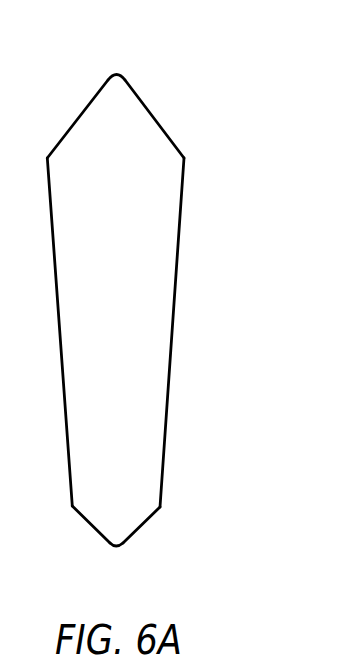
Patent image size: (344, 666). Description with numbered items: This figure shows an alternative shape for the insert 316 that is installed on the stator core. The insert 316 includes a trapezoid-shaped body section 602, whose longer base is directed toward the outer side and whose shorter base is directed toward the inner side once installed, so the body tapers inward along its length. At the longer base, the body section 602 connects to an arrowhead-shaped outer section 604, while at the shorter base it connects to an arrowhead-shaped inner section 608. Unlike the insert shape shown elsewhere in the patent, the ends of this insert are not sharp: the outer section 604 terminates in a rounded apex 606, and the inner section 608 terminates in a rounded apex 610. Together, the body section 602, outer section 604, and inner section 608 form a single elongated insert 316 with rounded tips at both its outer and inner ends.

The insert 316 is at (167, 311).
The trapezoid-shaped body section 602 is at (148, 358).
The arrowhead-shaped outer section 604 is at (142, 137).
The rounded apex 606 is at (115, 74).
The arrowhead-shaped inner section 608 is at (133, 519).
The rounded apex 610 is at (112, 548).